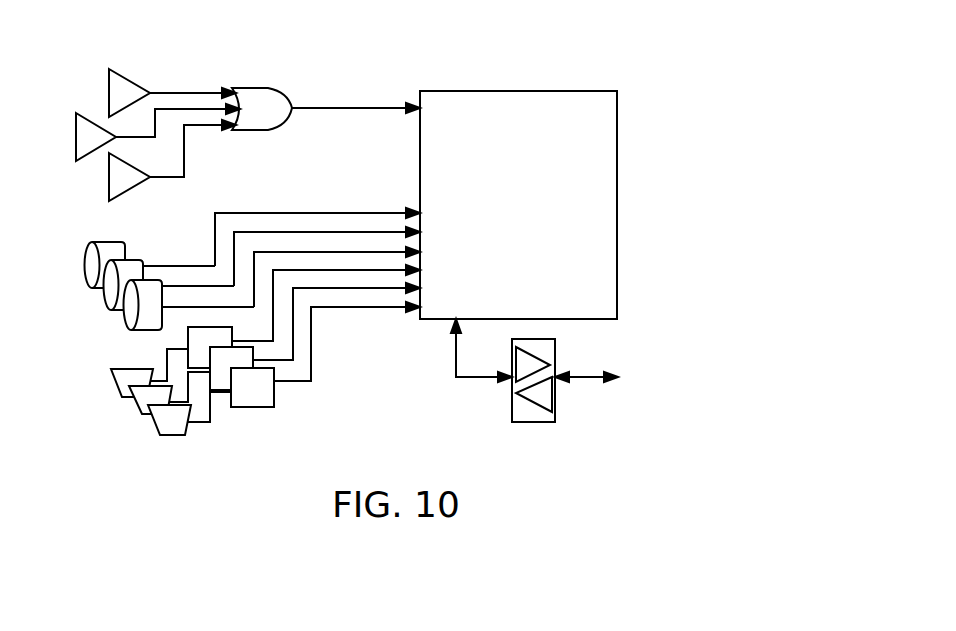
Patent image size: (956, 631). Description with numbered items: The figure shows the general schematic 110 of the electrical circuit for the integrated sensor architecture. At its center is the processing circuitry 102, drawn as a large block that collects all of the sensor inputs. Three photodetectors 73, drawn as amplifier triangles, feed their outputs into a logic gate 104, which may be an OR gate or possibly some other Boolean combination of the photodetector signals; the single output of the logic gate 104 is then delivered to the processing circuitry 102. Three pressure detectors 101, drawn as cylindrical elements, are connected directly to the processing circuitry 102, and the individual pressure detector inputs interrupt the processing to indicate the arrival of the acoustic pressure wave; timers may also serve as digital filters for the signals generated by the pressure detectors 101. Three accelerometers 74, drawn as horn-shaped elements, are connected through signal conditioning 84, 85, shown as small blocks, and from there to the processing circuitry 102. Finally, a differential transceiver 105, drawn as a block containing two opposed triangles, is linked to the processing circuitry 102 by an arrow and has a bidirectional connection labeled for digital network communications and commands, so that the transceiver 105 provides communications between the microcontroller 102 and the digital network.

The photodetectors 73 is at (109, 92).
The logic gate 104 is at (252, 93).
The processing circuitry 102 is at (608, 165).
The pressure detectors 101 is at (93, 290).
The accelerometers 74 is at (163, 437).
The signal conditioning 84 is at (304, 368).
The signal conditioning 85 is at (195, 370).
The differential transceiver 105 is at (552, 353).
The general schematic 110 is at (414, 292).